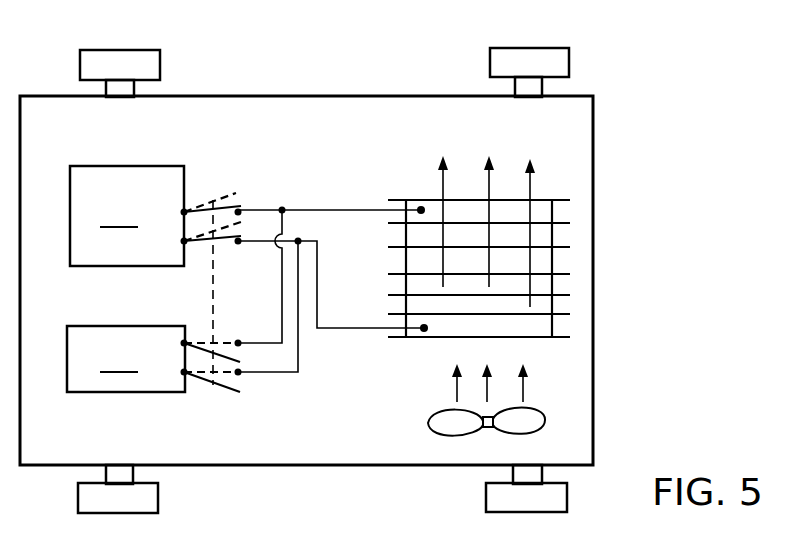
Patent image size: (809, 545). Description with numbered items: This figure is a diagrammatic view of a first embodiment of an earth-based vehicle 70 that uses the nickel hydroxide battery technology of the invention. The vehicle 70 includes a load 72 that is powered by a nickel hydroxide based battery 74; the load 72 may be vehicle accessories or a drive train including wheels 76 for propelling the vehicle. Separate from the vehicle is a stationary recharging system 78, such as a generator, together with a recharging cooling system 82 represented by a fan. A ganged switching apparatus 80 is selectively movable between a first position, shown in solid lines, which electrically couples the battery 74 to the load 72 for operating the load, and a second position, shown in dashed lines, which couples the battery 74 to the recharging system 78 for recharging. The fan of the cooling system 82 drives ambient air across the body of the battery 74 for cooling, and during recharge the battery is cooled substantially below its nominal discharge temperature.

The vehicle 70 is at (596, 187).
The load 72 is at (127, 216).
The nickel hydroxide based battery 74 is at (418, 193).
The wheels 76 is at (144, 58).
The stationary recharging system 78 is at (126, 359).
The ganged switching apparatus 80 is at (255, 379).
The recharging cooling system 82 is at (532, 423).